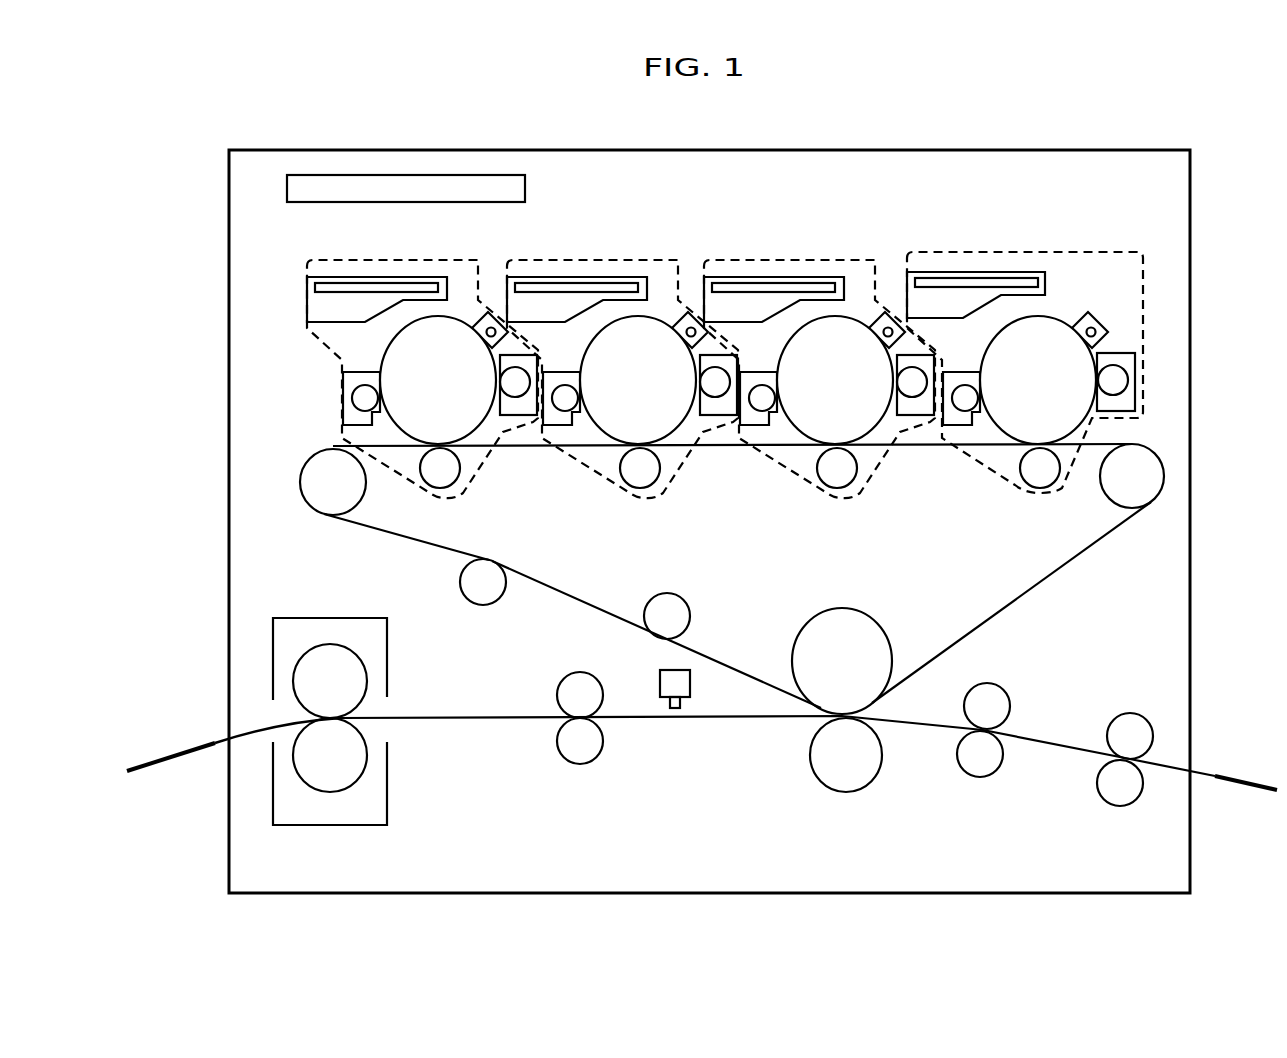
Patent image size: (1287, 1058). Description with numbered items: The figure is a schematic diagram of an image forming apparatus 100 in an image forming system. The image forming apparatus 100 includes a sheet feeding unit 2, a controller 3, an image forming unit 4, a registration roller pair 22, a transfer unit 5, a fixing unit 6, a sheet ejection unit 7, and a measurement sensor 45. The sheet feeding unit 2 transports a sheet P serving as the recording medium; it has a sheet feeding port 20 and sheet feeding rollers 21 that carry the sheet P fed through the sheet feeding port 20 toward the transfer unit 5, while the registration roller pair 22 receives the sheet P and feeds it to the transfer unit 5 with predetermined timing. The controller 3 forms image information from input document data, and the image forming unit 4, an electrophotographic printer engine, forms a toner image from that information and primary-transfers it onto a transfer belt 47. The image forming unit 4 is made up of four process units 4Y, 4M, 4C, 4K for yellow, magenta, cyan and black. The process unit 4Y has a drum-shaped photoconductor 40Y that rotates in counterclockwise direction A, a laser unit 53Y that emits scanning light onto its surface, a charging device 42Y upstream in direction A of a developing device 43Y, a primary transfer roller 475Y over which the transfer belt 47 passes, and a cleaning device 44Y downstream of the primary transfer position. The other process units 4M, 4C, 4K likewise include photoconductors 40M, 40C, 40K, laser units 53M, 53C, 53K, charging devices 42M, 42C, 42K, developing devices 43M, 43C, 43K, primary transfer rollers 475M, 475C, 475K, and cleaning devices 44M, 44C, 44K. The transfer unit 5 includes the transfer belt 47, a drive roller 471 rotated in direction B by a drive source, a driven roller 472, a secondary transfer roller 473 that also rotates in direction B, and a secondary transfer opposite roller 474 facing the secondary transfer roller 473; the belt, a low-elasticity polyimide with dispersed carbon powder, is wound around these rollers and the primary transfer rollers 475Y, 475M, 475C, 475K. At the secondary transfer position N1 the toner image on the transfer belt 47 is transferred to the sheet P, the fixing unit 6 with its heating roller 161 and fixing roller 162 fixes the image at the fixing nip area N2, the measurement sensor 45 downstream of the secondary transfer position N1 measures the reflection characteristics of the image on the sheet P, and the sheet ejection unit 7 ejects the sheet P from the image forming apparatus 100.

The image forming apparatus 100 is at (1068, 117).
The sheet feeding unit 2 is at (1095, 720).
The controller 3 is at (445, 175).
The image forming unit 4 is at (258, 277).
The process unit 4Y is at (471, 252).
The process unit 4M is at (671, 252).
The process unit 4C is at (868, 252).
The process unit 4K is at (1083, 250).
The transfer unit 5 is at (858, 791).
The fixing unit 6 is at (353, 723).
The sheet ejection unit 7 is at (226, 733).
The sheet feeding port 20 is at (1146, 764).
The sheet feeding rollers 21 is at (1100, 792).
The registration roller pair 22 is at (998, 773).
The photoconductor 40Y is at (420, 393).
The photoconductor 40M is at (620, 393).
The photoconductor 40C is at (817, 393).
The photoconductor 40K is at (1020, 393).
The charging device 42Y is at (488, 312).
The charging device 42M is at (688, 312).
The charging device 42C is at (885, 312).
The charging device 42K is at (1085, 312).
The developing device 43Y is at (362, 372).
The developing device 43M is at (562, 372).
The developing device 43C is at (759, 372).
The developing device 43K is at (960, 372).
The cleaning device 44Y is at (517, 416).
The cleaning device 44M is at (717, 416).
The cleaning device 44C is at (914, 416).
The cleaning device 44K is at (1118, 353).
The measurement sensor 45 is at (660, 684).
The transfer belt 47 is at (1030, 594).
The laser unit 53Y is at (341, 277).
The laser unit 53M is at (560, 277).
The laser unit 53C is at (748, 277).
The laser unit 53K is at (948, 272).
The heating roller 161 is at (330, 644).
The fixing roller 162 is at (330, 792).
The drive roller 471 is at (1118, 505).
The driven roller 472 is at (310, 463).
The secondary transfer roller 473 is at (843, 608).
The secondary transfer opposite roller 474 is at (878, 790).
The primary transfer roller 475Y is at (448, 497).
The primary transfer roller 475M is at (648, 497).
The primary transfer roller 475C is at (845, 497).
The primary transfer roller 475K is at (1026, 492).
The counterclockwise direction A is at (420, 333).
The direction B is at (1055, 557).
The secondary transfer position N1 is at (813, 722).
The fixing nip area N2 is at (378, 712).
The sheet P is at (170, 765).